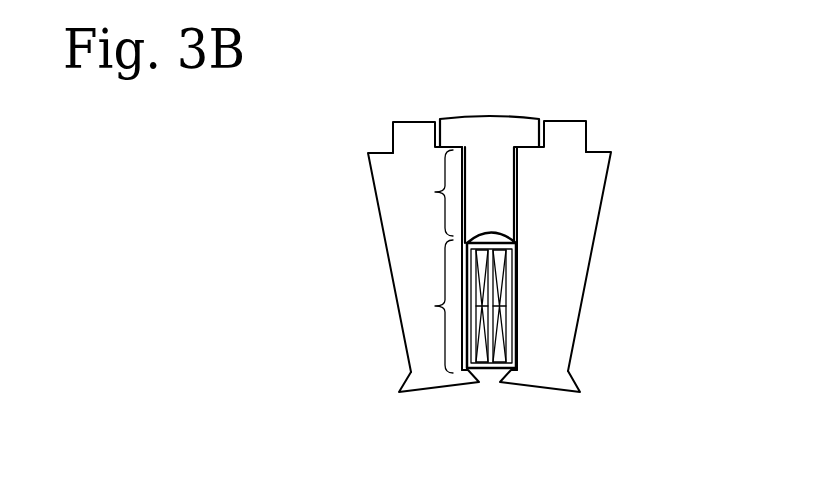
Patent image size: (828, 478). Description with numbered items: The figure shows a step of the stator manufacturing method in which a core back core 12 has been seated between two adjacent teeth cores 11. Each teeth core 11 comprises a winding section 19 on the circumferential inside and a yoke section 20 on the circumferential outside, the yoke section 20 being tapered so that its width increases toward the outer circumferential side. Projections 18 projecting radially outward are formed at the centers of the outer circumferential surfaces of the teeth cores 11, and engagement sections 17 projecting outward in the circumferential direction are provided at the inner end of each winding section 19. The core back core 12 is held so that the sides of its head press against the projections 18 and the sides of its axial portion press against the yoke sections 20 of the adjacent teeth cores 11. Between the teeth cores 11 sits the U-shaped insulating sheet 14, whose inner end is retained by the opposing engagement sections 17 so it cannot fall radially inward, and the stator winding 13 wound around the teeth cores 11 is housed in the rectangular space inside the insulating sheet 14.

The teeth core 11 is at (490, 213).
The core back core 12 is at (527, 98).
The stator winding 13 is at (503, 377).
The insulating sheet 14 is at (487, 370).
The engagement section 17 is at (398, 378).
The projection 18 is at (413, 123).
The winding section 19 is at (433, 307).
The yoke section 20 is at (433, 192).